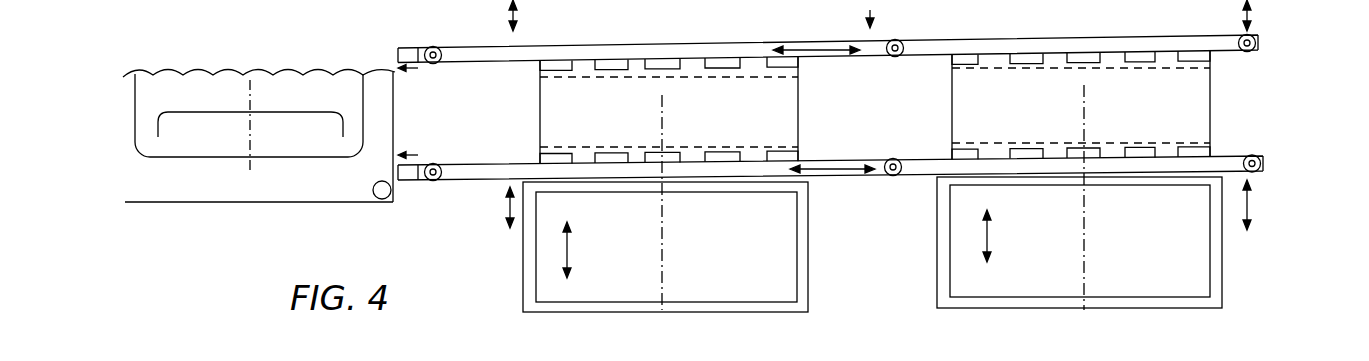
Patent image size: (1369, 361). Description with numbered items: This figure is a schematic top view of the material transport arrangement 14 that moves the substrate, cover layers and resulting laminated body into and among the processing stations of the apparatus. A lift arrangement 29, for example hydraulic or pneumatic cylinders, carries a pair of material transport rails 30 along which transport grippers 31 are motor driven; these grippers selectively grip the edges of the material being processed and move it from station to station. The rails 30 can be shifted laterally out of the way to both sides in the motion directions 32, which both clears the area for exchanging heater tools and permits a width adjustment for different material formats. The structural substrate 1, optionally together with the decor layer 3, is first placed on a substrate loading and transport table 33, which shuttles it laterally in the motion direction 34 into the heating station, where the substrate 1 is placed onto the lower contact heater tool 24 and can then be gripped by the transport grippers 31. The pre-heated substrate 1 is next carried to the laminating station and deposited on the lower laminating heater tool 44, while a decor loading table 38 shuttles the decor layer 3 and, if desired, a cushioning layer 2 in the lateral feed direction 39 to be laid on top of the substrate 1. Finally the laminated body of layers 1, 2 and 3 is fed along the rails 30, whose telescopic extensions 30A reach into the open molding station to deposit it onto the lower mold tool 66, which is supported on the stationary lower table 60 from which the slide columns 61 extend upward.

The structural substrate 1 is at (965, 280).
The cushioning layer 2 is at (748, 282).
The decor layer 3 is at (674, 276).
The material transport arrangement 14 is at (874, 14).
The lower contact heater tool 24 is at (970, 98).
The lift arrangement 29 is at (437, 47).
The material transport rails 30 is at (963, 47).
The telescopic extensions 30A is at (405, 47).
The transport grippers 31 is at (1027, 55).
The motion directions 32 is at (515, 15).
The substrate loading and transport table 33 is at (1213, 273).
The motion direction 34 is at (992, 233).
The decor loading table 38 is at (800, 287).
The lateral feed direction 39 is at (572, 248).
The lower laminating heater tool 44 is at (760, 108).
The lower table 60 is at (323, 192).
The slide columns 61 is at (378, 196).
The lower mold tool 66 is at (278, 142).